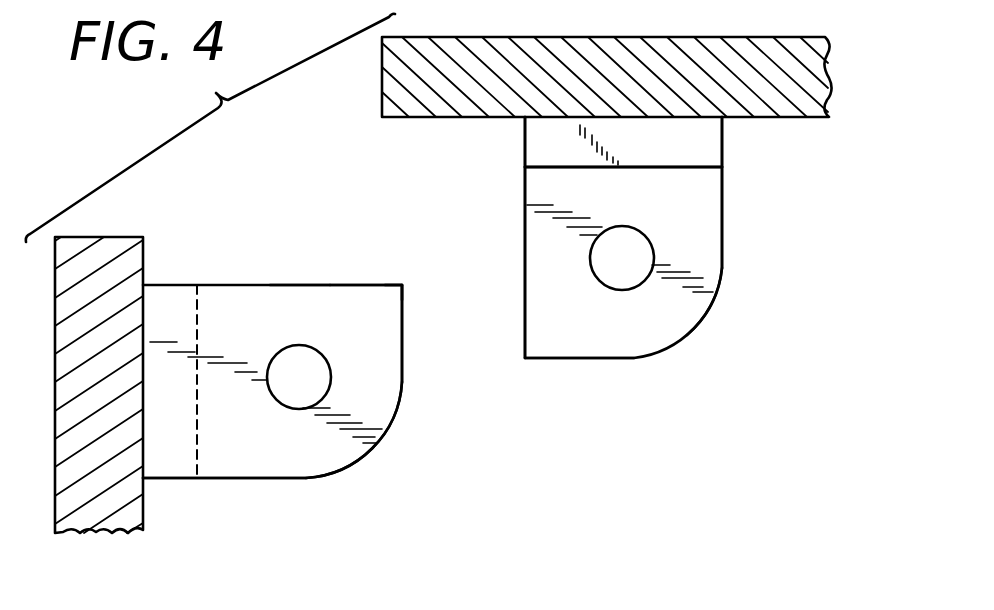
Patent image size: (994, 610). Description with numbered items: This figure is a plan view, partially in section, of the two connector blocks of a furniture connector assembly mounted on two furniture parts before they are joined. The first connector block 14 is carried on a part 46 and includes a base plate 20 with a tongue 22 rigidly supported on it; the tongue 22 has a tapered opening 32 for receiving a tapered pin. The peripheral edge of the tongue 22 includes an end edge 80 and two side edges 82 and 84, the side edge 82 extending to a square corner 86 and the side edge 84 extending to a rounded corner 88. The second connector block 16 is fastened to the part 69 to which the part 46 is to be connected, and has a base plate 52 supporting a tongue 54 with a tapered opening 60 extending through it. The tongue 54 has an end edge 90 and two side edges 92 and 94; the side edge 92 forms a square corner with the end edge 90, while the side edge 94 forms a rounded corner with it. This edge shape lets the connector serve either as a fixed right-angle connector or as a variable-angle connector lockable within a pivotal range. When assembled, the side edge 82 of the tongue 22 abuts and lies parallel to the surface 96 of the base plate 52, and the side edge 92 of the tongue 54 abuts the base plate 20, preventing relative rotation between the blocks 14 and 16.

The first connector block 14 is at (273, 285).
The second connector block 16 is at (723, 197).
The base plate 20 is at (162, 297).
The tongue 22 is at (293, 292).
The tapered opening 32 is at (297, 368).
The part 46 is at (98, 245).
The base plate 52 is at (702, 148).
The tongue 54 is at (697, 265).
The tapered opening 60 is at (613, 273).
The part 69 is at (435, 103).
The end edge 80 is at (402, 327).
The side edge 82 is at (376, 284).
The side edge 84 is at (287, 480).
The square corner 86 is at (403, 284).
The rounded corner 88 is at (375, 443).
The end edge 90 is at (557, 359).
The side edge 92 is at (525, 228).
The side edge 94 is at (723, 237).
The surface 96 is at (553, 168).